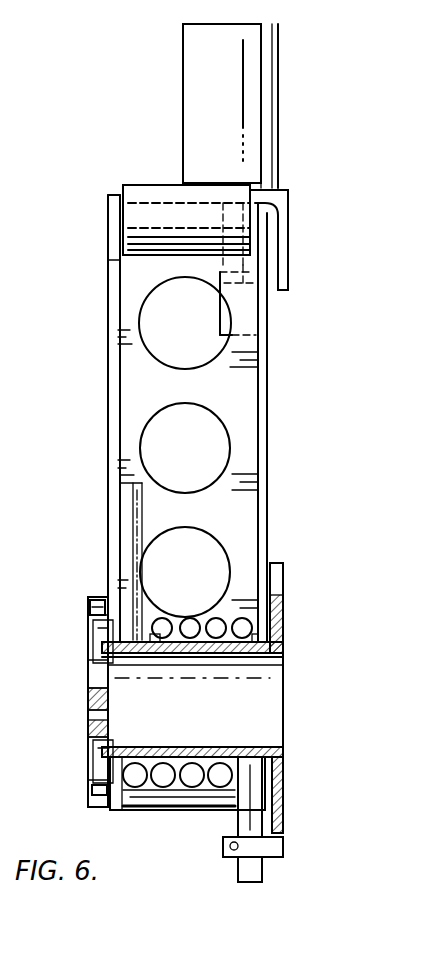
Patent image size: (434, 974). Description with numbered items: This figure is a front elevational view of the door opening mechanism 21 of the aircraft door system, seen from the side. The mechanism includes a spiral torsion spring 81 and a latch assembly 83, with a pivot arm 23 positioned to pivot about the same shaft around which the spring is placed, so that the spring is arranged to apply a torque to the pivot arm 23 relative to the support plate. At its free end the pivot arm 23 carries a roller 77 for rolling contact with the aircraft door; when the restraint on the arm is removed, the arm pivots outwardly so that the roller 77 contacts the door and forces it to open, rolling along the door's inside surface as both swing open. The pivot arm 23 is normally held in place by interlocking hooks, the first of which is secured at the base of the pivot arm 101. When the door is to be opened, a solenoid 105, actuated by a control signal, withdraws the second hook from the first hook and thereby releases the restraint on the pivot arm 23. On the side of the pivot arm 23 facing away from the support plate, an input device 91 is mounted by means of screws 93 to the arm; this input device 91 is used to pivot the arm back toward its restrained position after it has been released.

The solenoid 105 is at (258, 100).
The roller 77 is at (150, 185).
The door opening mechanism 21 is at (108, 335).
The pivot arm 23 is at (267, 492).
The base of the pivot arm 101 is at (245, 312).
The latch assembly 83 is at (260, 663).
The spiral torsion spring 81 is at (200, 806).
The input device 91 is at (88, 685).
The screws 93 is at (88, 612).